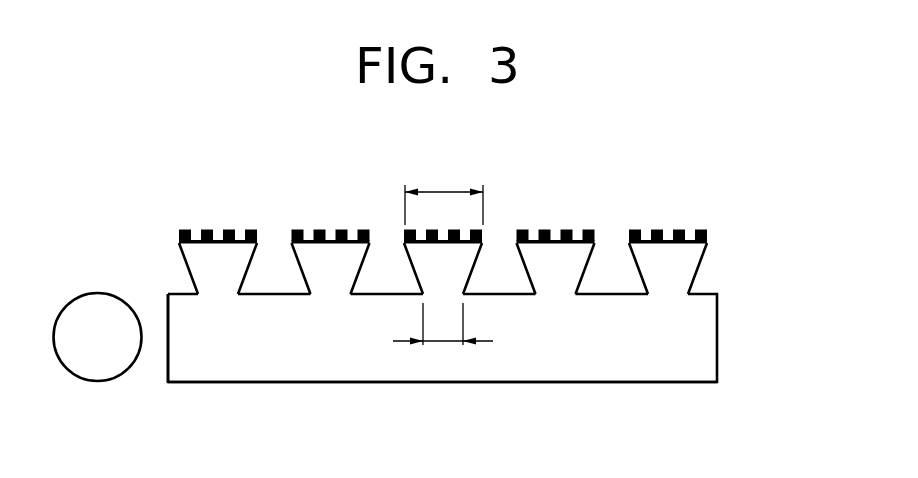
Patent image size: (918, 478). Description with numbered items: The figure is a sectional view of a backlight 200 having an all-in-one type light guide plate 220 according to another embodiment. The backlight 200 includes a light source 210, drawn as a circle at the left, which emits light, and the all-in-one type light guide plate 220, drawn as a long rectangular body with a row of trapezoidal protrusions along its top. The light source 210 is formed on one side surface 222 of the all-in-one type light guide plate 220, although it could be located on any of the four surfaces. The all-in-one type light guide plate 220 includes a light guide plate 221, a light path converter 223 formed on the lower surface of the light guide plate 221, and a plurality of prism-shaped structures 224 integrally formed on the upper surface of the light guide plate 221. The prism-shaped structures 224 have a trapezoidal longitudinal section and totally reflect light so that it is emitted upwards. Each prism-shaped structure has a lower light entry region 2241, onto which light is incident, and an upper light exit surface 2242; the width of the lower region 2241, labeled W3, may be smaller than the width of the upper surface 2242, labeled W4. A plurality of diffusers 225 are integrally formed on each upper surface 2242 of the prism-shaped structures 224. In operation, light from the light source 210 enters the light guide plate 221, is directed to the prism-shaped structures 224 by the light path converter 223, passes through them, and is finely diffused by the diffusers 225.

The backlight 200 is at (118, 190).
The light source 210 is at (95, 372).
The all-in-one type light guide plate 220 is at (798, 263).
The light guide plate 221 is at (707, 338).
The side surface 222 is at (167, 358).
The light path converter 223 is at (690, 383).
The prism-shaped structures 224 is at (482, 267).
The lower light entry regions 2241 is at (666, 295).
The upper light exit surfaces 2242 is at (668, 244).
The diffusers 225 is at (228, 228).